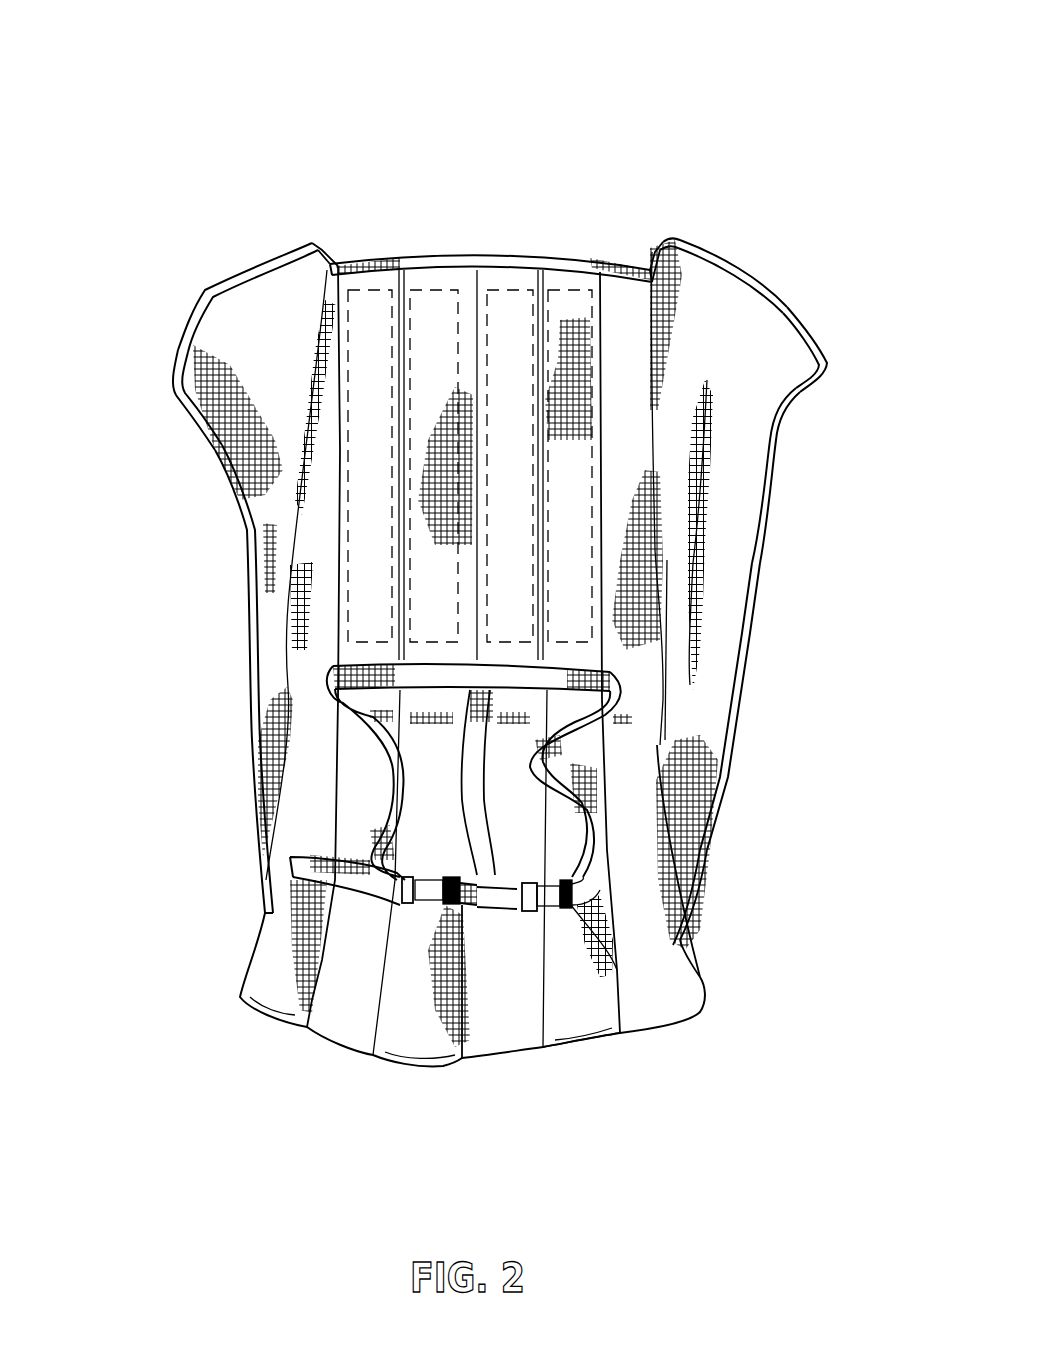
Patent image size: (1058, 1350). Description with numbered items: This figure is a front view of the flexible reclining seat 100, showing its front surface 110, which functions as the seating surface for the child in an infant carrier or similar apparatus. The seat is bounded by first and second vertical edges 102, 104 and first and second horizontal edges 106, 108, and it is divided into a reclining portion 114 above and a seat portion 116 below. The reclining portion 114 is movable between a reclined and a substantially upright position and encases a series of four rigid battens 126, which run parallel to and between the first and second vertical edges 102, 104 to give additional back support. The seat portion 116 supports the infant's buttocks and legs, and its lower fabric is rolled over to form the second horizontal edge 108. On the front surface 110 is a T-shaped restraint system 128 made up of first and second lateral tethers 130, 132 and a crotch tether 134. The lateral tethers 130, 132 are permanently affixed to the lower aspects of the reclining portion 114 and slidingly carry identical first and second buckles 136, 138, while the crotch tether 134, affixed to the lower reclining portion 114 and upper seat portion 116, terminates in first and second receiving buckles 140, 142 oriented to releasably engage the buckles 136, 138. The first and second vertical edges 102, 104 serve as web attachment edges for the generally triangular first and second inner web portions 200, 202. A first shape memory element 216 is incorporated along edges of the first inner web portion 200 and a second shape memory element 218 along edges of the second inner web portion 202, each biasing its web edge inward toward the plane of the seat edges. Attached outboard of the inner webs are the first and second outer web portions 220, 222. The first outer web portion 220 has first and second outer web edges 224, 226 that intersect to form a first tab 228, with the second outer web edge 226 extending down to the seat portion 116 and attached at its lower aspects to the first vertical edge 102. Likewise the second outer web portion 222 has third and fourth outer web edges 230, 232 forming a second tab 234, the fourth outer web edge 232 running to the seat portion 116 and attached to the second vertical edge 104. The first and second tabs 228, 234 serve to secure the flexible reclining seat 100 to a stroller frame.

The flexible reclining seat 100 is at (466, 590).
The front surface 110 is at (310, 93).
The first vertical edge 102 is at (297, 705).
The second vertical edge 104 is at (663, 745).
The first horizontal edge 106 is at (493, 252).
The second horizontal edge 108 is at (508, 1065).
The reclining portion 114 is at (434, 378).
The seat portion 116 is at (572, 988).
The rigid battens 126 is at (566, 290).
The T-shaped restraint system 128 is at (345, 822).
The first lateral tether 130 is at (380, 737).
The second lateral tether 132 is at (573, 727).
The crotch tether 134 is at (487, 846).
The first buckle 136 is at (395, 905).
The second buckle 138 is at (567, 895).
The first receiving buckle 140 is at (445, 897).
The second receiving buckle 142 is at (567, 900).
The first inner web portion 200 is at (277, 447).
The second inner web portion 202 is at (657, 383).
The first shape memory element 216 is at (320, 245).
The second shape memory element 218 is at (657, 245).
The first outer web portion 220 is at (265, 342).
The second outer web portion 222 is at (745, 420).
The first outer web edge 224 is at (262, 268).
The second outer web edge 226 is at (248, 607).
The first tab 228 is at (172, 393).
The third outer web edge 230 is at (728, 270).
The fourth outer web edge 232 is at (742, 637).
The second tab 234 is at (787, 340).